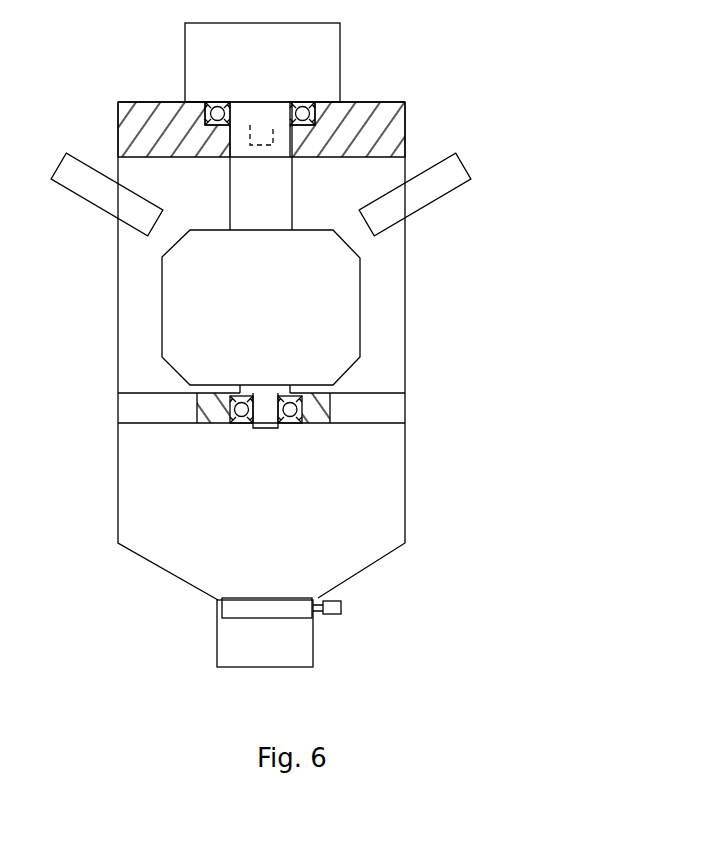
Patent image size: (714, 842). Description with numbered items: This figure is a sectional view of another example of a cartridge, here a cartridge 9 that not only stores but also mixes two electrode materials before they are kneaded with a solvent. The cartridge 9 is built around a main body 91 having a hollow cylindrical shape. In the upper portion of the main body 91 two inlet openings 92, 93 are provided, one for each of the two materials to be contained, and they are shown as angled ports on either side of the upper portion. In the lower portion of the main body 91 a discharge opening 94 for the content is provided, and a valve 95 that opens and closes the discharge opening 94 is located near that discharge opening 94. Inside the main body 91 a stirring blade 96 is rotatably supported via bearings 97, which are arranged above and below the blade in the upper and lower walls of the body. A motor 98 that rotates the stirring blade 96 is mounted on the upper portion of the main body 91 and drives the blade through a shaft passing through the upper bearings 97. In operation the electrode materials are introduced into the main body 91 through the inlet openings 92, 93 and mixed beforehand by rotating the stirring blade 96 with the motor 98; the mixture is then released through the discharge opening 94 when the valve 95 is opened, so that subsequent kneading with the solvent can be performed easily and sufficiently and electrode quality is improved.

The cartridge 9 is at (494, 118).
The main body 91 is at (405, 337).
The inlet opening 92 is at (84, 186).
The inlet opening 93 is at (444, 186).
The discharge opening 94 is at (273, 667).
The valve 95 is at (275, 612).
The stirring blade 96 is at (185, 308).
The bearings 97 is at (314, 103).
The motor 98 is at (318, 53).